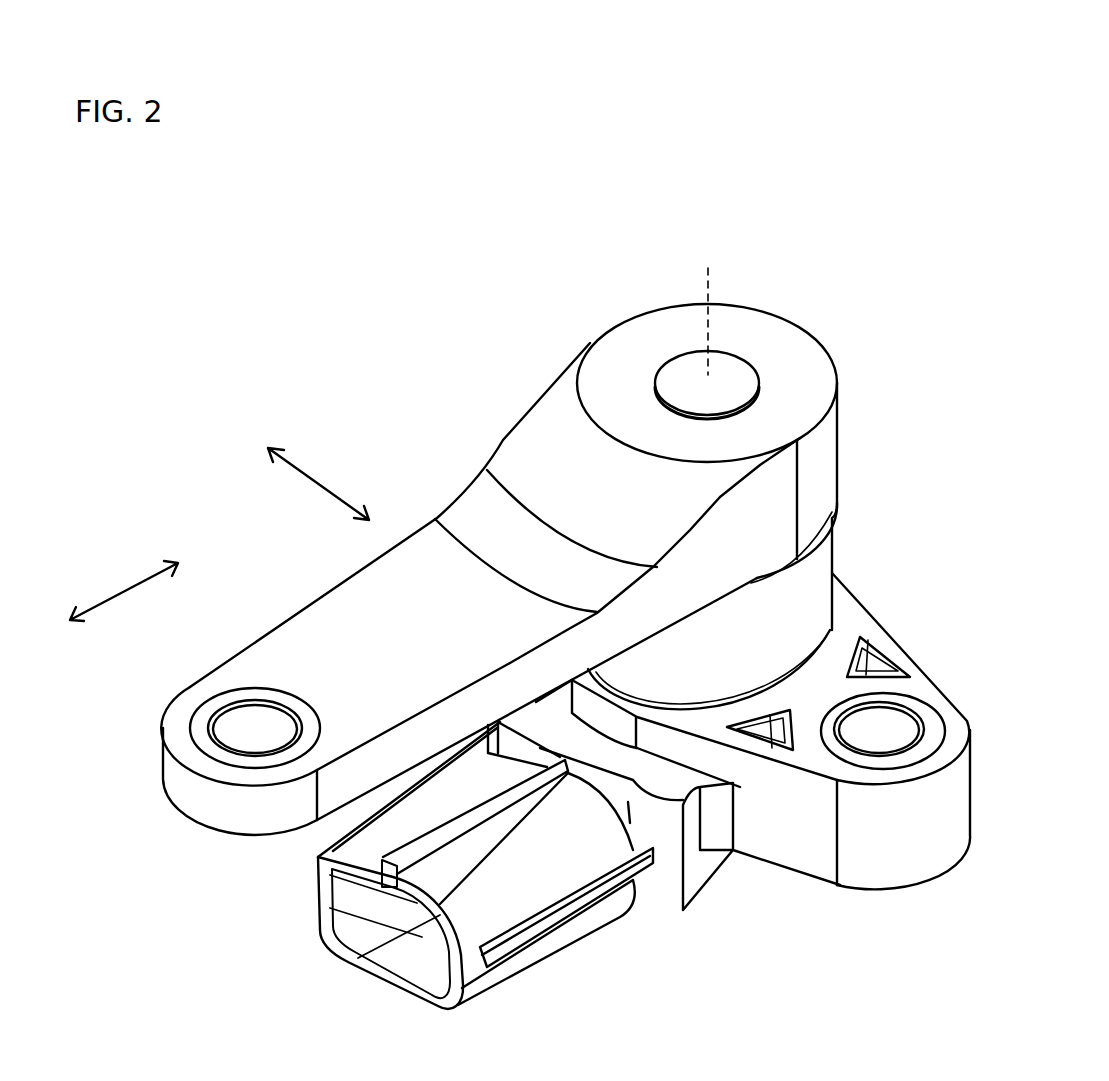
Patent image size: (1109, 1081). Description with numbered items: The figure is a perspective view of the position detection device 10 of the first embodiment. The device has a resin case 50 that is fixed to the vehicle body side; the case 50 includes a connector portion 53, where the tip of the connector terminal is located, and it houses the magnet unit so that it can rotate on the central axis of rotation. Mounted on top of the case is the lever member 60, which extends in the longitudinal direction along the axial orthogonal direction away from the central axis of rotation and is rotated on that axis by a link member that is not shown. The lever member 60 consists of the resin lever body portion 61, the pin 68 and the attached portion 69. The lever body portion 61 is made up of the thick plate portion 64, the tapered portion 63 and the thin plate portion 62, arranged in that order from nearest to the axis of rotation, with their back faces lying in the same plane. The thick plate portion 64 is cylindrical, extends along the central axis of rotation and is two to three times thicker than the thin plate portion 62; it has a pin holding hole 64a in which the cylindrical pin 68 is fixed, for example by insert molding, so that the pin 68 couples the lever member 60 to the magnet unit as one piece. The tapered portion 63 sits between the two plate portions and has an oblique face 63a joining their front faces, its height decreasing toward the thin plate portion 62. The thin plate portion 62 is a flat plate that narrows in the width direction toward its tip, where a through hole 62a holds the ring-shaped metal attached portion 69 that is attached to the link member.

The position detection device 10 is at (903, 283).
The case 50 is at (817, 590).
The connector portion 53 is at (503, 897).
The lever member 60 is at (630, 320).
The lever body portion 61 is at (403, 297).
The thin plate portion 62 is at (300, 640).
The through hole 62a is at (207, 703).
The tapered portion 63 is at (530, 472).
The oblique face 63a is at (543, 433).
The thick plate portion 64 is at (597, 373).
The pin holding hole 64a is at (743, 357).
The pin 68 is at (737, 377).
The attached portion 69 is at (218, 752).